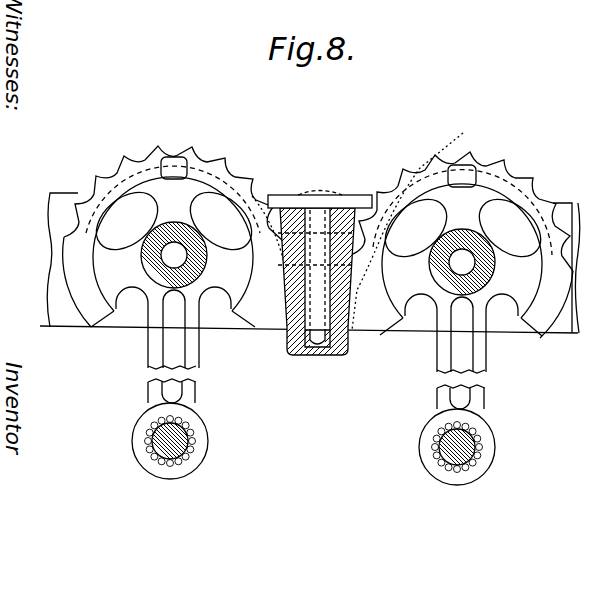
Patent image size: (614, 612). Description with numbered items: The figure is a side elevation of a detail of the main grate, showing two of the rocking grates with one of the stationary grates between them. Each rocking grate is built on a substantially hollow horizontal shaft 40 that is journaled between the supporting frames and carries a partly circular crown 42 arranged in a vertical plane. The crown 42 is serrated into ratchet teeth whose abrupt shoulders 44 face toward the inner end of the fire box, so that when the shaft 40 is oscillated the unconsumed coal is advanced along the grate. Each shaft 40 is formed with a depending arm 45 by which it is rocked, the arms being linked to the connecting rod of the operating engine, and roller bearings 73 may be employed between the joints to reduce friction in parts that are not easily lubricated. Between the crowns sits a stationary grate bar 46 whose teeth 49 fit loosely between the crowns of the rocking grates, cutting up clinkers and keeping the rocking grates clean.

The hollow horizontal shaft 40 is at (480, 290).
The partly circular crown 42 is at (199, 169).
The abrupt shoulder 44 is at (246, 181).
The depending arm 45 is at (183, 398).
The stationary grate bar 46 is at (336, 333).
The teeth 49 is at (367, 220).
The roller bearings 73 is at (190, 445).